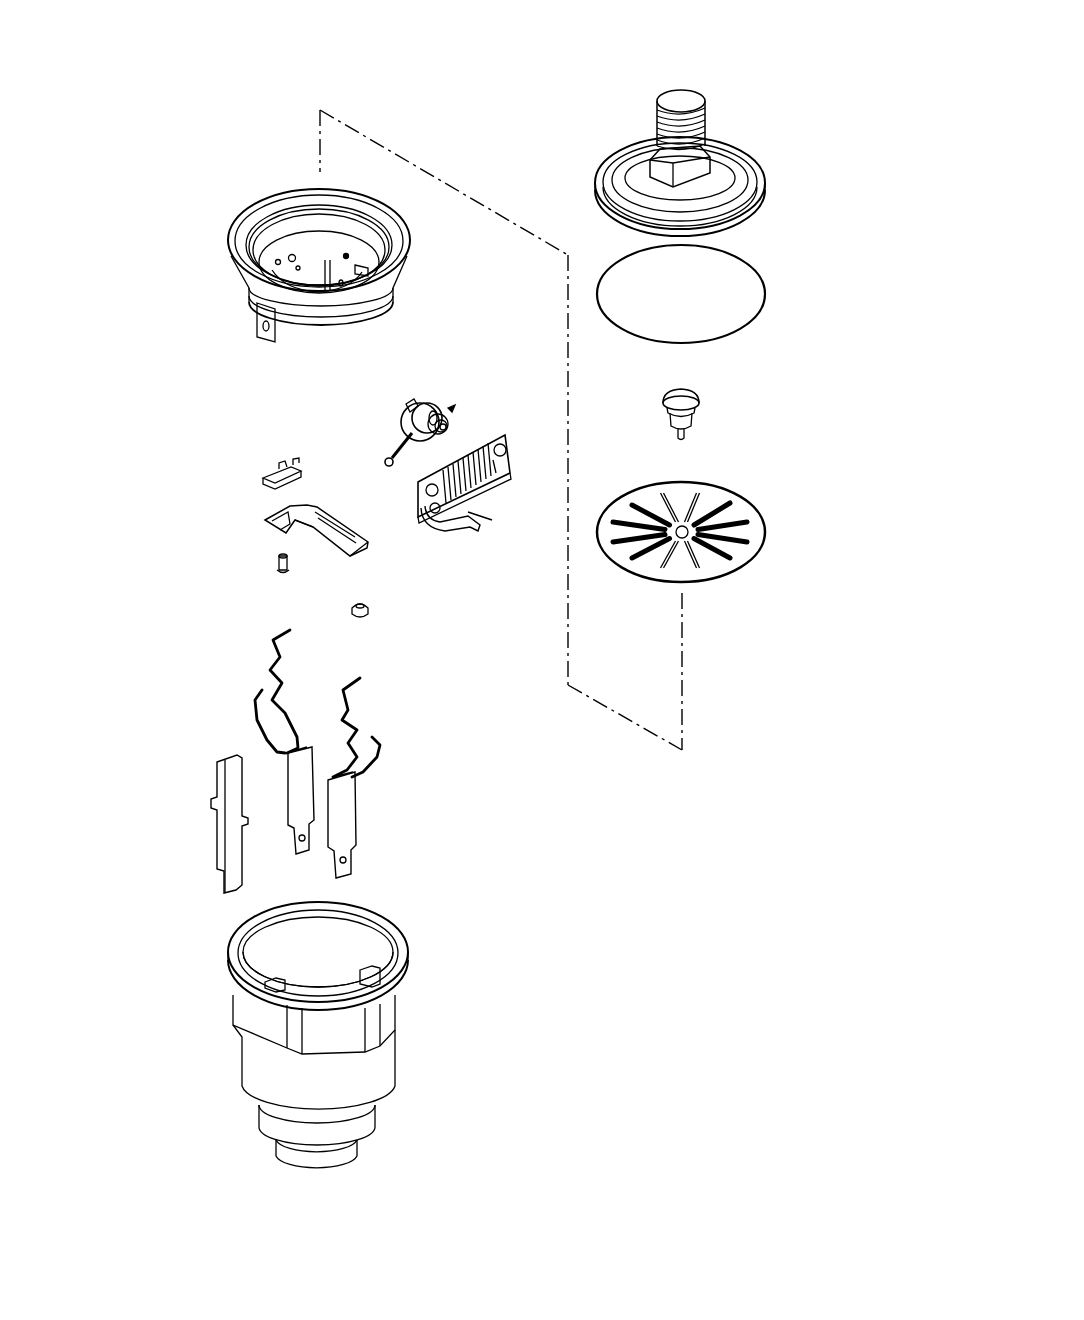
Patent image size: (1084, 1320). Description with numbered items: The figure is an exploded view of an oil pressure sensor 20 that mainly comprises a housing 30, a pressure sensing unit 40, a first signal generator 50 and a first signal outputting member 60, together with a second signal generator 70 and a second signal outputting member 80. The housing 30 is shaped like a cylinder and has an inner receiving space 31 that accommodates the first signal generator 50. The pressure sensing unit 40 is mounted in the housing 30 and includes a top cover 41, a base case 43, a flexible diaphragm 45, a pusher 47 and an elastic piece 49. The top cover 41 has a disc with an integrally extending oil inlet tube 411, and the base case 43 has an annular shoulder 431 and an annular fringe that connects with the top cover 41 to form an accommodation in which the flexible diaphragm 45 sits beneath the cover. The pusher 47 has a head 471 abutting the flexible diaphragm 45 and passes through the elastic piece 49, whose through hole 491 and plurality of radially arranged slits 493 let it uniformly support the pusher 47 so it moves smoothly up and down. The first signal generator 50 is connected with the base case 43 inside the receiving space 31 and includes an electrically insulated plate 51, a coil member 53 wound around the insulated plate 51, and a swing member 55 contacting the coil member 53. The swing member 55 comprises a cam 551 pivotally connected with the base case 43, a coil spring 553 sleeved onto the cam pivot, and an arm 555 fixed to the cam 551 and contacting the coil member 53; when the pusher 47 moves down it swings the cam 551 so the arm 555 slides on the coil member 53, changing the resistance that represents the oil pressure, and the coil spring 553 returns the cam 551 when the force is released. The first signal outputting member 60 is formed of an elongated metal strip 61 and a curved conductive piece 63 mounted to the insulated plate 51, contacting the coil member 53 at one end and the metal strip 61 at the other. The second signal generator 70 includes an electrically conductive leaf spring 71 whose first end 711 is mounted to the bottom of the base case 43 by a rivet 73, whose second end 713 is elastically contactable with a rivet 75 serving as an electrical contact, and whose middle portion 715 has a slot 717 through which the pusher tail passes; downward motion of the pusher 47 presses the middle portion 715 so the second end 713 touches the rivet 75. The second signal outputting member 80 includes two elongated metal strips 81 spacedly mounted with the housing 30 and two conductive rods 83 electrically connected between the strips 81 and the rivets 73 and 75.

The oil pressure sensor 20 is at (372, 68).
The housing 30 is at (265, 1063).
The receiving space 31 is at (338, 956).
The pressure sensing unit 40 is at (590, 118).
The top cover 41 is at (758, 177).
The oil inlet tube 411 is at (683, 100).
The base case 43 is at (232, 254).
The annular shoulder 431 is at (258, 226).
The flexible diaphragm 45 is at (765, 280).
The pusher 47 is at (720, 420).
The head 471 is at (690, 398).
The elastic piece 49 is at (832, 457).
The through hole 491 is at (690, 526).
The slits 493 is at (742, 542).
The first signal generator 50 is at (498, 404).
The insulated plate 51 is at (497, 462).
The coil member 53 is at (472, 505).
The swing member 55 is at (473, 330).
The cam 551 is at (436, 402).
The coil spring 553 is at (416, 405).
The arm 555 is at (398, 440).
The first signal outputting member 60 is at (190, 780).
The metal strip 61 is at (222, 836).
The curved conductive piece 63 is at (455, 528).
The second signal generator 70 is at (230, 533).
The electrically conductive leaf spring 71 is at (317, 505).
The first end 711 is at (276, 514).
The second end 713 is at (356, 548).
The middle portion 715 is at (336, 548).
The slot 717 is at (332, 533).
The rivet 73 is at (275, 568).
The rivet 75 is at (366, 612).
The second signal outputting member 80 is at (420, 775).
The metal strips 81 is at (307, 800).
The conductive rods 83 is at (286, 645).